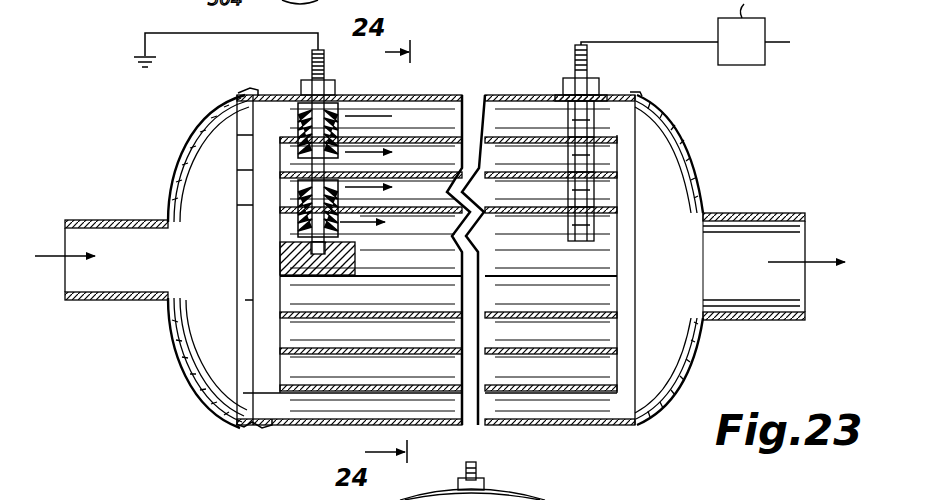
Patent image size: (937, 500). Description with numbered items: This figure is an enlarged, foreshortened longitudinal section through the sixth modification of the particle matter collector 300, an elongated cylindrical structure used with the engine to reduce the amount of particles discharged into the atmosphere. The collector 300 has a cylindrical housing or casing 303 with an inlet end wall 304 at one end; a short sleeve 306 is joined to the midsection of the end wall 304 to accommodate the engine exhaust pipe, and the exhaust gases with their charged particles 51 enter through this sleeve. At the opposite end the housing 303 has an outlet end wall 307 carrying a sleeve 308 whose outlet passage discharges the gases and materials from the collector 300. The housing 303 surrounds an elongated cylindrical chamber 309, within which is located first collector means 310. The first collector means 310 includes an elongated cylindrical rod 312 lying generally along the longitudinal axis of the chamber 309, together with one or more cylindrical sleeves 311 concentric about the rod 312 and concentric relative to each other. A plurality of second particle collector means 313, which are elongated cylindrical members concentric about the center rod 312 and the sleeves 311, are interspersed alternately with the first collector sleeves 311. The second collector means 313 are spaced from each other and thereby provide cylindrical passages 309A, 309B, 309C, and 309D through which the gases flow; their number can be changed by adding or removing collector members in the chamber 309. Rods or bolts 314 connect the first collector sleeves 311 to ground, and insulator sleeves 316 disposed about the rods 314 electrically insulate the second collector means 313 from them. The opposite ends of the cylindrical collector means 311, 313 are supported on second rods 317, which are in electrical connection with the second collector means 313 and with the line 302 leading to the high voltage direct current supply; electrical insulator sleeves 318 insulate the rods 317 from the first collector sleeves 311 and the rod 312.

The particle matter collector 300 is at (180, 155).
The line 302 is at (581, 42).
The cylindrical housing 303 is at (570, 427).
The inlet end wall 304 is at (198, 350).
The short sleeve 306 is at (118, 220).
The outlet end wall 307 is at (692, 160).
The sleeve 308 is at (765, 212).
The elongated cylindrical chamber 309 is at (193, 300).
The cylindrical passage 309A is at (510, 115).
The cylindrical passage 309B is at (450, 164).
The cylindrical passage 309C is at (445, 199).
The cylindrical passage 309D is at (440, 234).
The first collector means 310 is at (280, 258).
The cylindrical sleeve 311 is at (280, 176).
The elongated cylindrical rod 312 is at (430, 290).
The second particle collector means 313 is at (600, 190).
The rod 314 is at (312, 64).
The insulator sleeve 316 is at (298, 132).
The second rod 317 is at (590, 60).
The electrical insulator sleeve 318 is at (630, 98).
The charged particles 51 is at (124, 294).